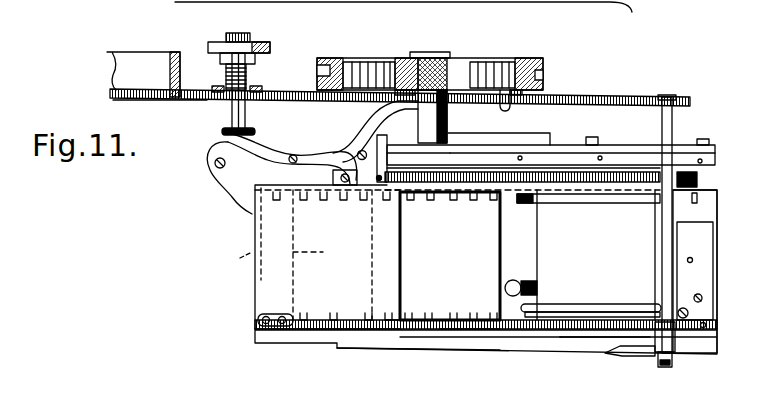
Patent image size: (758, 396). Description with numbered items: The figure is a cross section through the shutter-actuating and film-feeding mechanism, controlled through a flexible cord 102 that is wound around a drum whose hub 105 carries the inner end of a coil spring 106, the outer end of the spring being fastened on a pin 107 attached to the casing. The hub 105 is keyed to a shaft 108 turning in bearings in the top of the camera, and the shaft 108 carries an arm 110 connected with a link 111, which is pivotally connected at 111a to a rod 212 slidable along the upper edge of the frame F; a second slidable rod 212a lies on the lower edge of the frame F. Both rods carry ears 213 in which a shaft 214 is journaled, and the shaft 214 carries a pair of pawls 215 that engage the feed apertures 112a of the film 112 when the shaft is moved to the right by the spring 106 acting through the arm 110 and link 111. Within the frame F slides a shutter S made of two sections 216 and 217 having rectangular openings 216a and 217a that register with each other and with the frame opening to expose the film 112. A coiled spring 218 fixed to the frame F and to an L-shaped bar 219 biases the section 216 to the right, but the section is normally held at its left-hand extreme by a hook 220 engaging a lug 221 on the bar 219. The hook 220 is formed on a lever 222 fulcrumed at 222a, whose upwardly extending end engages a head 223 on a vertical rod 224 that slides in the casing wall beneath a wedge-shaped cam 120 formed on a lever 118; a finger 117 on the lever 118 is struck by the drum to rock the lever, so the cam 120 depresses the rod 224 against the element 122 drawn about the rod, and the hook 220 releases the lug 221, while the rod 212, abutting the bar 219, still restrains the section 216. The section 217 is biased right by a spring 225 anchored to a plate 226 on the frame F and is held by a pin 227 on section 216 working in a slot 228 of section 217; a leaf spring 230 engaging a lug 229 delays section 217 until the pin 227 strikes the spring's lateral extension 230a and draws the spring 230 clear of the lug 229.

The cord 102 is at (335, 58).
The hub 105 is at (462, 58).
The coil spring 106 is at (368, 62).
The pin 107 is at (510, 108).
The shaft 108 is at (466, 60).
The arm 110 is at (375, 131).
The link 111 is at (470, 131).
The pivotal connection 111a is at (594, 139).
The film 112 is at (262, 226).
The feed apertures 112a is at (220, 261).
The finger 117 is at (266, 45).
The lever 118 is at (250, 43).
The wedge-shaped cam 120 is at (235, 43).
The spring 122 is at (228, 86).
The rod 212 is at (640, 141).
The rod 212a is at (634, 358).
The ears 213 is at (676, 146).
The shaft 214 is at (658, 239).
The pawls 215 is at (593, 203).
The shutter section 216 is at (456, 305).
The rectangular opening 216a is at (332, 255).
The shutter section 217 is at (330, 305).
The rectangular opening 217a is at (405, 266).
The coiled spring 218 is at (475, 195).
The L-shaped bar 219 is at (421, 157).
The hook 220 is at (372, 188).
The lug 221 is at (343, 186).
The lever 222 is at (263, 151).
The fulcrum 222a is at (290, 161).
The head 223 is at (224, 137).
The rod 224 is at (232, 114).
The spring 225 is at (430, 335).
The plate 226 is at (705, 243).
The pin 227 is at (515, 280).
The slot 228 is at (537, 284).
The lug 229 is at (516, 332).
The leaf spring 230 is at (578, 300).
The lateral extension 230a is at (678, 296).
The shutter S is at (392, 305).
The frame F is at (594, 349).